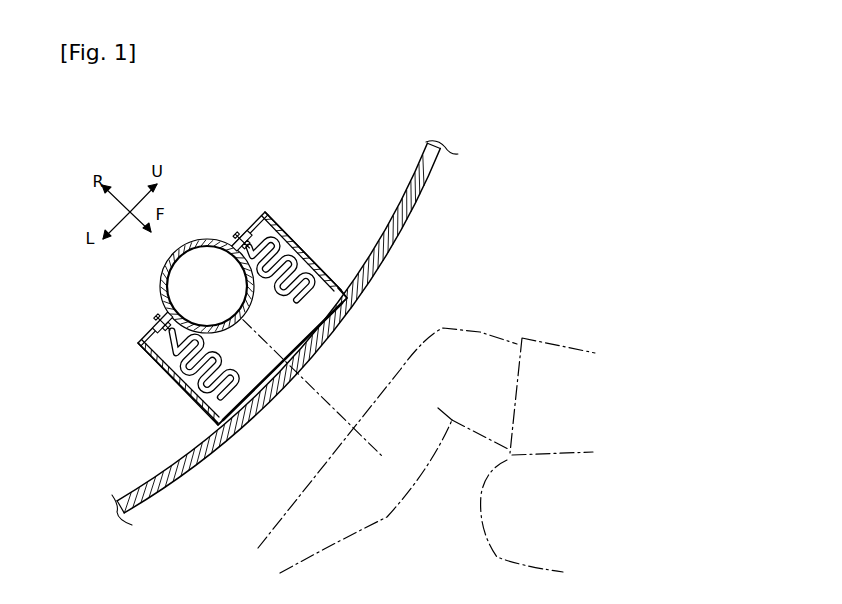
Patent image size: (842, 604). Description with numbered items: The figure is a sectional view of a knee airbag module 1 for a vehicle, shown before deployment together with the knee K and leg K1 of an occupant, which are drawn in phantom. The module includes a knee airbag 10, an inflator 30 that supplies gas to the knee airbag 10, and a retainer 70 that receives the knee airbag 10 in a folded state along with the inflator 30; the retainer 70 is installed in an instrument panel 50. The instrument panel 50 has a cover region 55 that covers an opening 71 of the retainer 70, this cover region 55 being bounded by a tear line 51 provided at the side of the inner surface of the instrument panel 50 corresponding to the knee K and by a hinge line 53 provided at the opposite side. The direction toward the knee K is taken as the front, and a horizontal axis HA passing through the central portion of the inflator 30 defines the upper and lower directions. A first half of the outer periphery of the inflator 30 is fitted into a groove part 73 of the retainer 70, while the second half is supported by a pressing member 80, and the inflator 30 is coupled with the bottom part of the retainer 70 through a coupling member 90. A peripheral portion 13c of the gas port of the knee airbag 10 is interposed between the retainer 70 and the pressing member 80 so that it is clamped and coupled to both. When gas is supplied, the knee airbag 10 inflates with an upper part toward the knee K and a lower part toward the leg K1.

The knee airbag module 1 is at (345, 140).
The knee airbag 10 is at (306, 262).
The peripheral portion 13c is at (160, 324).
The inflator 30 is at (221, 256).
The instrument panel 50 is at (433, 185).
The tear line 51 is at (359, 294).
The hinge line 53 is at (233, 438).
The cover region 55 is at (335, 338).
The retainer 70 is at (325, 268).
The opening 71 is at (339, 270).
The groove part 73 is at (190, 241).
The pressing member 80 is at (285, 256).
The coupling member 90 is at (247, 236).
The horizontal axis HA is at (158, 243).
The knee K is at (481, 331).
The leg K1 is at (327, 479).